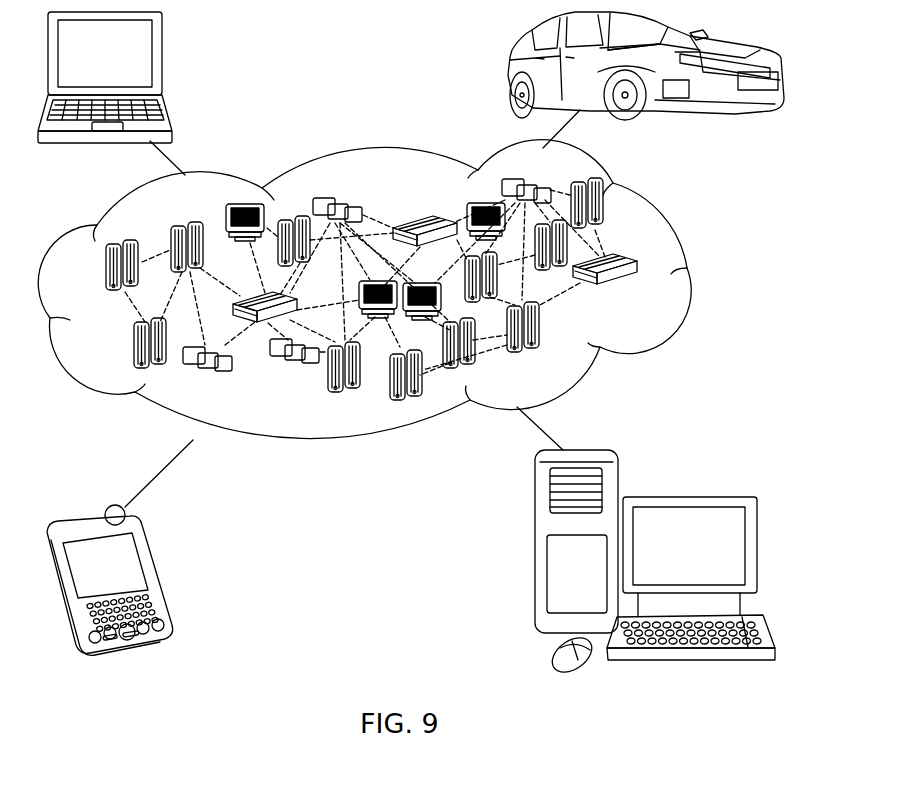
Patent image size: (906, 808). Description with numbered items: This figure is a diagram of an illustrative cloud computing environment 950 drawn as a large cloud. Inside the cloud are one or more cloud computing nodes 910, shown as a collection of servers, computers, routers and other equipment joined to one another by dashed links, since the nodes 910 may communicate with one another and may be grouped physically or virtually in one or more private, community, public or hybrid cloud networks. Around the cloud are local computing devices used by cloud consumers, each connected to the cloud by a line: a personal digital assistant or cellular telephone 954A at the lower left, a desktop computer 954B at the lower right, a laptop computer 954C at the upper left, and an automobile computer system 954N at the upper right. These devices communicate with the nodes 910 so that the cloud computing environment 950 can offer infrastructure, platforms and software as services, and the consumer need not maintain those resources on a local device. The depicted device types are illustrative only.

The cloud computing environment 950 is at (687, 268).
The cloud computing nodes 910 is at (646, 294).
The personal digital assistant or cellular telephone 954A is at (158, 573).
The desktop computer 954B is at (685, 494).
The laptop computer 954C is at (165, 60).
The automobile computer system 954N is at (510, 70).